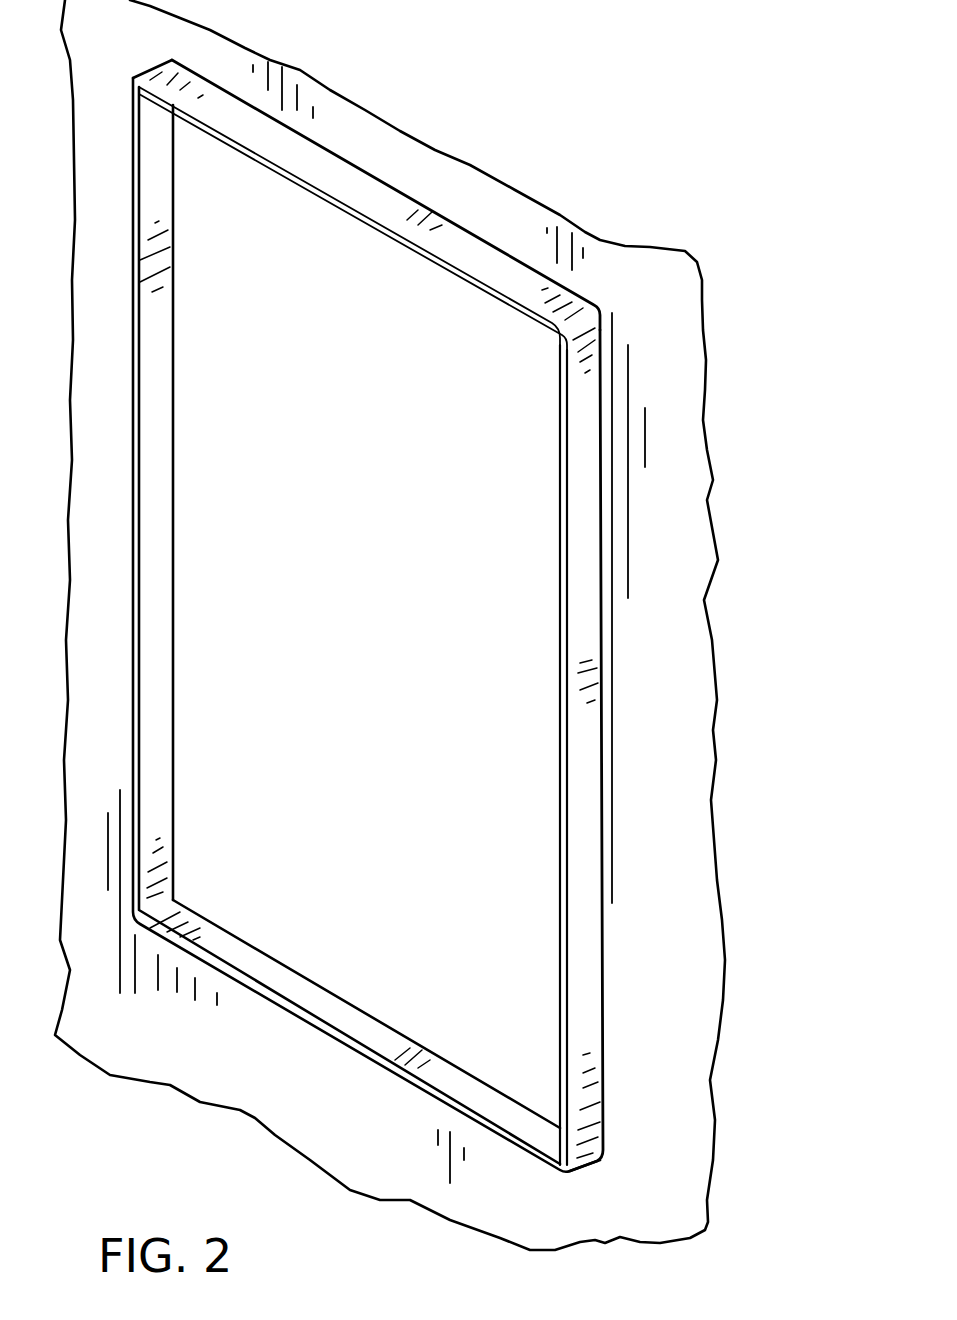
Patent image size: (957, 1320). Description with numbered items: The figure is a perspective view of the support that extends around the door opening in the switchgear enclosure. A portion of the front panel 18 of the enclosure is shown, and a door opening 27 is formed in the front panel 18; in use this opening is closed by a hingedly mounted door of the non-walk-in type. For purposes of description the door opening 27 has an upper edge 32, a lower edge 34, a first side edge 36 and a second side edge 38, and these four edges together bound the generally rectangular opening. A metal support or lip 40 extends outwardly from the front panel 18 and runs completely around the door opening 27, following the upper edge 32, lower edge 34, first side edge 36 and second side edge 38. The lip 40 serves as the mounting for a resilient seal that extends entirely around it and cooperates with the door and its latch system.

The front panel 18 is at (684, 979).
The door opening 27 is at (512, 825).
The upper edge 32 is at (357, 165).
The lower edge 34 is at (277, 958).
The first side edge 36 is at (173, 620).
The second side edge 38 is at (603, 732).
The support or lip 40 is at (586, 563).